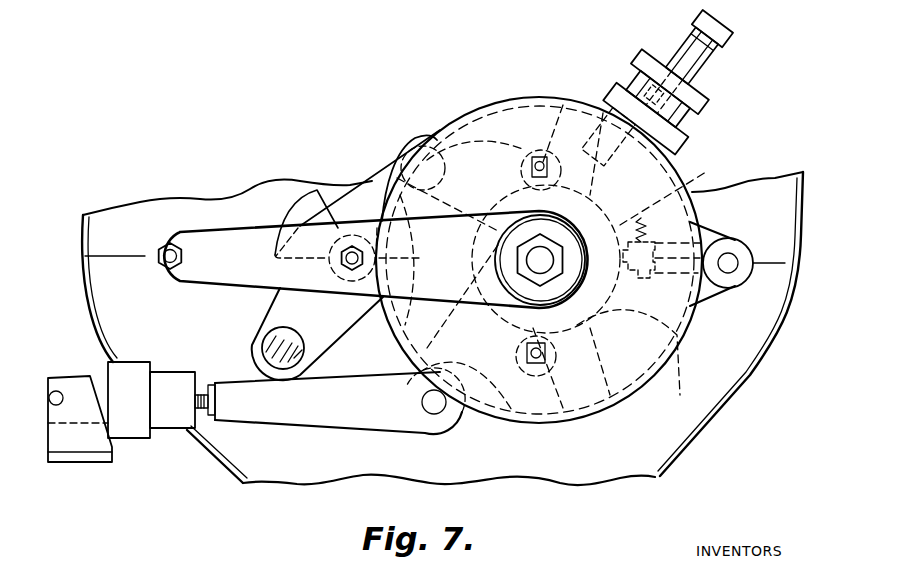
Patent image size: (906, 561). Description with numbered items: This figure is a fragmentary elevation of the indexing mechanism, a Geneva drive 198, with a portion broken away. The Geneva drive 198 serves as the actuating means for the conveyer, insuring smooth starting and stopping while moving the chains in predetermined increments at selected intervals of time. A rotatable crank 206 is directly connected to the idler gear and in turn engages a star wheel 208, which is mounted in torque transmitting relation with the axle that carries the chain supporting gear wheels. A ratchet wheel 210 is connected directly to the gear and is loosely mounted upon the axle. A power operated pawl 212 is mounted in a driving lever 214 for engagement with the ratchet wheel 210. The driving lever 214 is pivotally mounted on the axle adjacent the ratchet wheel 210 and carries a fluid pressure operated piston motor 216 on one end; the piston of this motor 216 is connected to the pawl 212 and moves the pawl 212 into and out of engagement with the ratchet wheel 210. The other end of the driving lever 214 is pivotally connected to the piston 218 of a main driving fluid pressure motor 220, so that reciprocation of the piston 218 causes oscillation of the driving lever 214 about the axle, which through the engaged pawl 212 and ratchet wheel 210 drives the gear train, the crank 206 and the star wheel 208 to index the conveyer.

The Geneva drive 198 is at (378, 149).
The rotatable crank 206 is at (372, 182).
The star wheel 208 is at (636, 367).
The ratchet wheel 210 is at (648, 193).
The power operated pawl 212 is at (678, 110).
The driving lever 214 is at (605, 98).
The fluid pressure operated piston motor 216 is at (703, 60).
The piston 218 is at (297, 413).
The main driving fluid pressure motor 220 is at (170, 418).